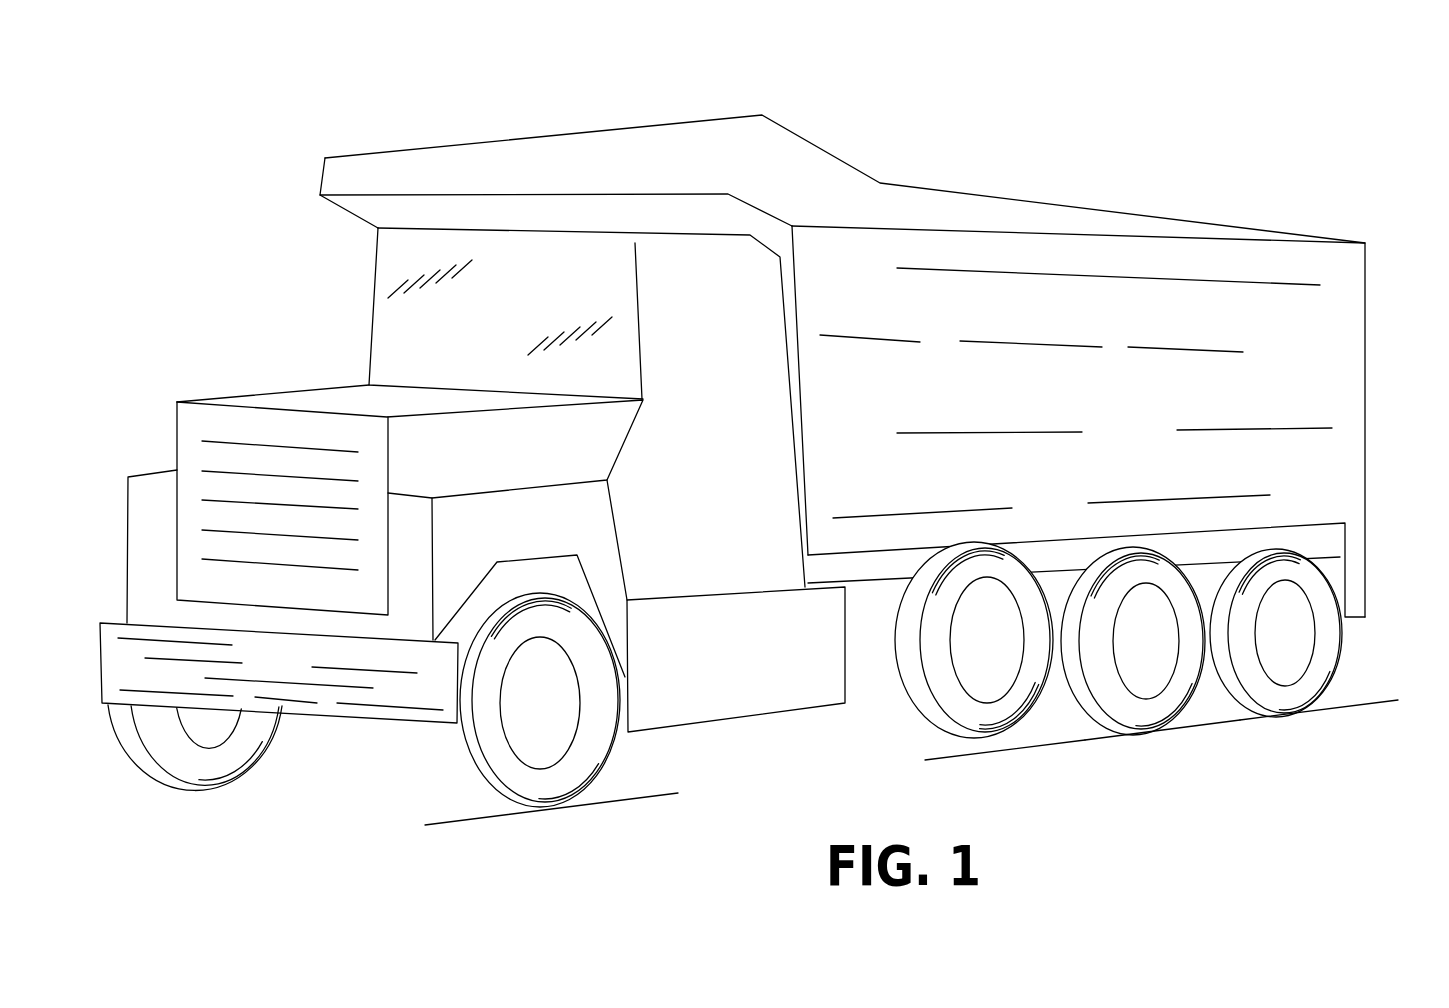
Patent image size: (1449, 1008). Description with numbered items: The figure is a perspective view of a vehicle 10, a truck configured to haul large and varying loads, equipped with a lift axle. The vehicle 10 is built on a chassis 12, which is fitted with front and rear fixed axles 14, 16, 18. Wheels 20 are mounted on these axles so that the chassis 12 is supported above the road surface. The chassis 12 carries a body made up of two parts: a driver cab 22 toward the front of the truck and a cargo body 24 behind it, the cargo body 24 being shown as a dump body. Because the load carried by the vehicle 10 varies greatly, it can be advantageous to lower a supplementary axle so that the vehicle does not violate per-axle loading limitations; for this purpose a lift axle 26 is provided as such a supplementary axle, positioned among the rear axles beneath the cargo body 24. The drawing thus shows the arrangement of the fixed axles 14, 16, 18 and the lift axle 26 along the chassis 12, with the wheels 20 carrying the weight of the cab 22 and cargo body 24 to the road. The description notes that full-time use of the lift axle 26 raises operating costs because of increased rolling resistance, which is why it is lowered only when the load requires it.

The vehicle 10 is at (774, 460).
The chassis 12 is at (876, 685).
The front fixed axle 14 is at (590, 818).
The rear fixed axle 16 is at (1173, 741).
The rear fixed axle 18 is at (1301, 725).
The wheels 20 is at (1007, 568).
The driver cab 22 is at (340, 326).
The cargo body 24 is at (1097, 185).
The lift axle 26 is at (1006, 742).